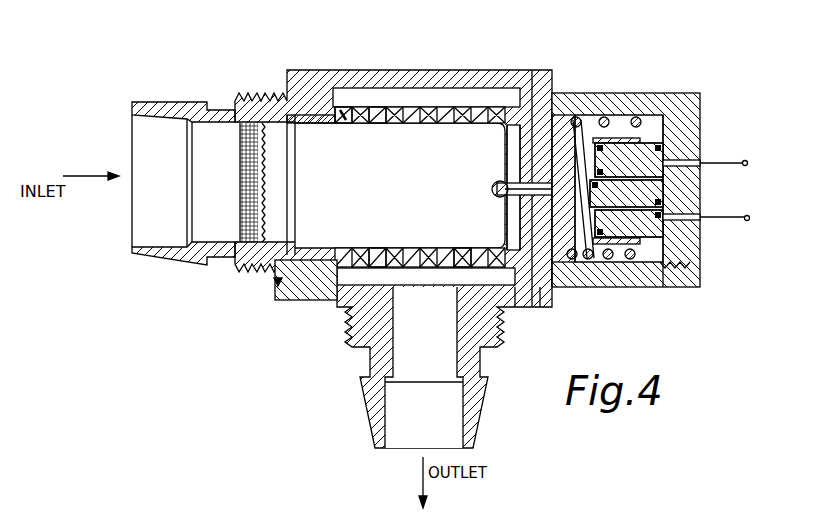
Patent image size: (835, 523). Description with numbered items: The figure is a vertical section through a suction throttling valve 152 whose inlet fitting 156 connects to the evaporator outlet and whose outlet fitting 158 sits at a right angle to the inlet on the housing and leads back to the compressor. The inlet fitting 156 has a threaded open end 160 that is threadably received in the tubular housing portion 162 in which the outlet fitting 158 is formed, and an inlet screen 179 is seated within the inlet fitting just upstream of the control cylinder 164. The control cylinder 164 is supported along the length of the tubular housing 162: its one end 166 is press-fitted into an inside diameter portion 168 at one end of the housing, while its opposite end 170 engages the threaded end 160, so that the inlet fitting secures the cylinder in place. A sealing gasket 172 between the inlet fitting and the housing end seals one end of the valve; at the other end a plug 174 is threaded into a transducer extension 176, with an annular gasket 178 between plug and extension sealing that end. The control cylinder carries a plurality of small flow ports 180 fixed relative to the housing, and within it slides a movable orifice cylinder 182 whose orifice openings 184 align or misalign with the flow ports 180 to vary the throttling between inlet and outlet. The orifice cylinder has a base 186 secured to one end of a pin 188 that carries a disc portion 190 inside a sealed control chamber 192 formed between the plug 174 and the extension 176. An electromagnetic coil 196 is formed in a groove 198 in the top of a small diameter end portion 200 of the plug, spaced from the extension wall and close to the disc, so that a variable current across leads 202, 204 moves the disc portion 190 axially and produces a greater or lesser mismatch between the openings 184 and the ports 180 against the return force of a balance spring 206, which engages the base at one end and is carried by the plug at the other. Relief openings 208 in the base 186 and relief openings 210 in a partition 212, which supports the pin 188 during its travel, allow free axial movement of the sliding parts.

The suction throttling valve 152 is at (499, 70).
The inlet fitting 156 is at (208, 102).
The outlet fitting 158 is at (474, 420).
The threaded open end 160 is at (300, 267).
The tubular housing portion 162 is at (407, 80).
The control cylinder 164 is at (378, 106).
The end of control cylinder 166 is at (548, 92).
The inside diameter portion 168 is at (525, 268).
The opposite end of control cylinder 170 is at (340, 261).
The sealing gasket 172 is at (277, 285).
The plug 174 is at (693, 127).
The transducer extension 176 is at (665, 276).
The annular gasket 178 is at (674, 272).
The filter screen 179 is at (246, 166).
The flow ports 180 is at (462, 107).
The orifice cylinder 182 is at (355, 106).
The orifice openings 184 is at (377, 123).
The base 186 is at (496, 187).
The pin 188 is at (516, 193).
The disc portion 190 is at (573, 158).
The sealed control chamber 192 is at (623, 120).
The electromagnetic coil 196 is at (641, 207).
The groove 198 is at (662, 150).
The small diameter end portion 200 is at (640, 240).
The coil lead 202 is at (748, 165).
The coil lead 204 is at (750, 218).
The balance spring 206 is at (593, 258).
The relief openings 208 is at (511, 145).
The relief openings 210 is at (536, 148).
The partition 212 is at (549, 271).